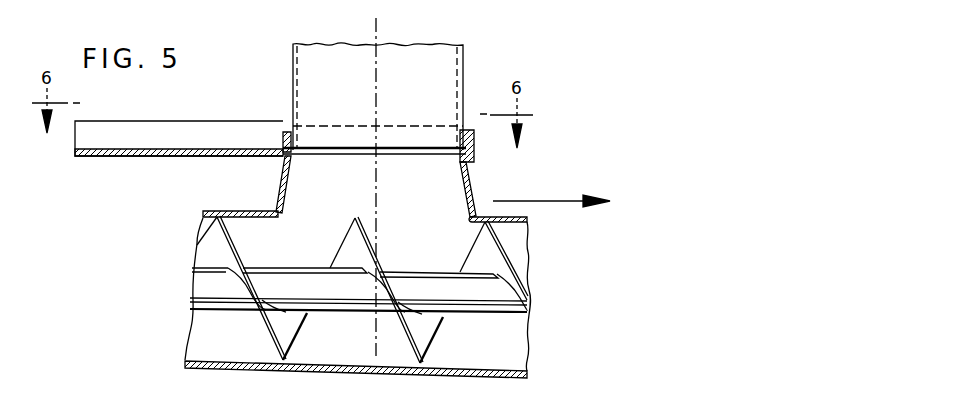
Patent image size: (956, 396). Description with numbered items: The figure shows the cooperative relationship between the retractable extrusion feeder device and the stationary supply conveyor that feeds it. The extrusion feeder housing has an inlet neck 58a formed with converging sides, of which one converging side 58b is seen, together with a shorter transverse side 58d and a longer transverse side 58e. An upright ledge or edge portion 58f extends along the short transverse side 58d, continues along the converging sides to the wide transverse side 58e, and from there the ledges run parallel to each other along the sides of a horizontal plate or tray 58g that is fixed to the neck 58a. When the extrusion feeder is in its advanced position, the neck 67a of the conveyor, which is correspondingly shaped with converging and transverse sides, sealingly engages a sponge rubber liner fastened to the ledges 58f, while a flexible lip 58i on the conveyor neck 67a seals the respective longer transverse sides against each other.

The inlet neck 58a is at (276, 206).
The converging side 58b is at (365, 153).
The shorter transverse side 58d is at (460, 161).
The longer transverse side 58e is at (290, 157).
The upright ledge 58f is at (474, 146).
The horizontal plate or tray 58g is at (148, 158).
The flexible lip 58i is at (284, 150).
The neck of the conveyor 67a is at (464, 63).